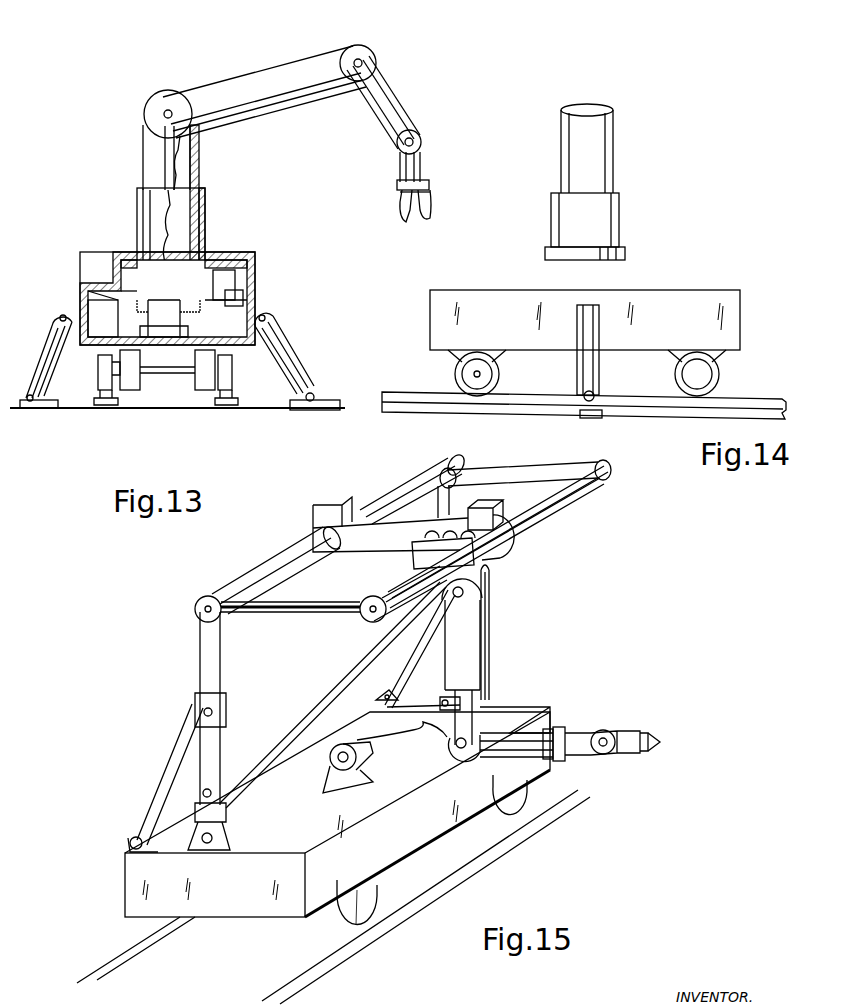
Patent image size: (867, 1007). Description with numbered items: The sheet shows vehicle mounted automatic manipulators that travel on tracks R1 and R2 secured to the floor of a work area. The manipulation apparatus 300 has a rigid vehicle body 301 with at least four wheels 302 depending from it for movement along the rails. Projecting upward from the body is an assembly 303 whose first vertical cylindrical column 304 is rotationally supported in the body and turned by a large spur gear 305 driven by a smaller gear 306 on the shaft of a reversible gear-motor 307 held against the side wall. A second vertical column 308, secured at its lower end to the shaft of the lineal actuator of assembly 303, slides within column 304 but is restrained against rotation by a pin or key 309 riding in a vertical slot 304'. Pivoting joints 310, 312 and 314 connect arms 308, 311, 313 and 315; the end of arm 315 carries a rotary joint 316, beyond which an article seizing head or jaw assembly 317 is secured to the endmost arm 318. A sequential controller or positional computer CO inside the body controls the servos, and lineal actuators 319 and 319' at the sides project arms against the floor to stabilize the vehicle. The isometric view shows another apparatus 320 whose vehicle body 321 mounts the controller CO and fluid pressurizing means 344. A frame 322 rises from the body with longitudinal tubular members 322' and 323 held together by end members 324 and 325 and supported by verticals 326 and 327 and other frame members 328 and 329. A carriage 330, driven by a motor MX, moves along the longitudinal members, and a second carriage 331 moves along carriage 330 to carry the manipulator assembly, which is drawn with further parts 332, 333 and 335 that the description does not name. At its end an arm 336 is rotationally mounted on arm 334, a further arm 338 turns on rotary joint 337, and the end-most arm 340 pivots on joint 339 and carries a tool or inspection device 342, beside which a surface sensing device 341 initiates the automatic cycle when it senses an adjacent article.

In FIG. 13, the manipulation apparatus 300 is at (275, 253).
In FIG. 13, the vehicle body 301 is at (257, 302).
In FIG. 14, the vehicle body 301 is at (733, 322).
In FIG. 13, the wheels 302 is at (232, 372).
In FIG. 14, the wheels 302 is at (720, 378).
In FIG. 15, the wheels 302 is at (366, 925).
In FIG. 13, the lineal actuator 303 is at (133, 239).
In FIG. 13, the first vertical cylindrical column 304 is at (145, 253).
In FIG. 14, the first vertical cylindrical column 304 is at (606, 220).
In FIG. 13, the vertical slot 304' is at (233, 248).
In FIG. 13, the large spur gear 305 is at (100, 320).
In FIG. 13, the second smaller circular gear 306 is at (235, 295).
In FIG. 13, the reversible gear-motor 307 is at (212, 272).
In FIG. 13, the second vertical column 308 is at (152, 157).
In FIG. 14, the second vertical column 308 is at (613, 127).
In FIG. 13, the pin or key 309 is at (198, 197).
In FIG. 13, the pivoting joint 310 is at (165, 101).
In FIG. 13, the arm 311 is at (262, 78).
In FIG. 13, the pivoting joint 312 is at (365, 52).
In FIG. 13, the arm 313 is at (398, 104).
In FIG. 13, the pivoting joint 314 is at (418, 140).
In FIG. 13, the arm 315 is at (420, 165).
In FIG. 13, the rotary joint 316 is at (428, 188).
In FIG. 13, the article seizing head or jaw assembly 317 is at (428, 208).
In FIG. 13, the endmost arm 318 is at (402, 194).
In FIG. 13, the lineal actuator 319 is at (196, 355).
In FIG. 14, the lineal actuator 319 is at (615, 353).
In FIG. 13, the lineal actuator 319' is at (174, 418).
In FIG. 14, the lineal actuator 319' is at (626, 436).
In FIG. 15, the vehicle mounted manipulation or tool apparatus 320 is at (632, 566).
In FIG. 15, the vehicle body 321 is at (478, 830).
In FIG. 15, the frame 322 is at (540, 543).
In FIG. 15, the longitudinal tubular member 322' is at (525, 532).
In FIG. 15, the longitudinal tubular member 323 is at (270, 573).
In FIG. 15, the end member 324 is at (520, 470).
In FIG. 15, the end member 325 is at (282, 612).
In FIG. 15, the vertical 326 is at (200, 660).
In FIG. 15, the vertical 327 is at (430, 500).
In FIG. 15, the frame member 328 is at (172, 740).
In FIG. 15, the frame member 329 is at (272, 730).
In FIG. 15, the carriage 330 is at (513, 540).
In FIG. 15, the second carriage 331 is at (470, 580).
In FIG. 15, the guide strip 332 is at (462, 600).
In FIG. 15, the hydraulic cylinder 333 is at (482, 648).
In FIG. 15, the arm 334 is at (474, 685).
In FIG. 15, the rod end clevis 335 is at (462, 752).
In FIG. 15, the arm 336 is at (520, 757).
In FIG. 15, the rotary joint 337 is at (562, 742).
In FIG. 15, the arm 338 is at (585, 757).
In FIG. 15, the joint 339 is at (606, 729).
In FIG. 15, the end-most arm 340 is at (620, 733).
In FIG. 15, the surface sensing device 341 is at (645, 753).
In FIG. 15, the tool or inspection device 342 is at (662, 742).
In FIG. 15, the fluid pressurizing means 344 is at (338, 760).
In FIG. 15, the motor MX is at (318, 505).
In FIG. 13, the sequential controller or positional computer CO is at (63, 318).
In FIG. 13, the track R1 is at (100, 408).
In FIG. 15, the track R1 is at (117, 953).
In FIG. 13, the track R2 is at (232, 408).
In FIG. 14, the track R2 is at (440, 408).
In FIG. 15, the track R2 is at (284, 972).